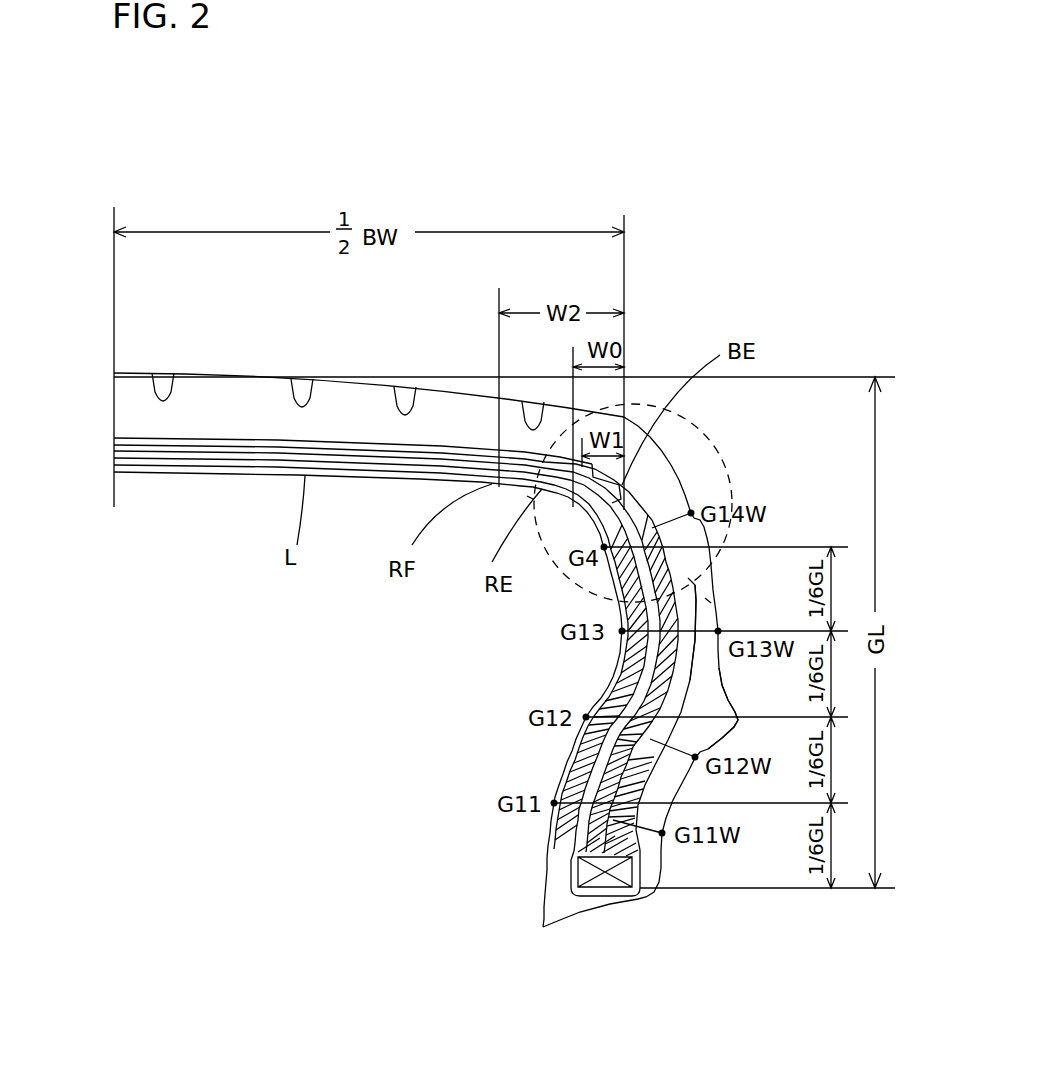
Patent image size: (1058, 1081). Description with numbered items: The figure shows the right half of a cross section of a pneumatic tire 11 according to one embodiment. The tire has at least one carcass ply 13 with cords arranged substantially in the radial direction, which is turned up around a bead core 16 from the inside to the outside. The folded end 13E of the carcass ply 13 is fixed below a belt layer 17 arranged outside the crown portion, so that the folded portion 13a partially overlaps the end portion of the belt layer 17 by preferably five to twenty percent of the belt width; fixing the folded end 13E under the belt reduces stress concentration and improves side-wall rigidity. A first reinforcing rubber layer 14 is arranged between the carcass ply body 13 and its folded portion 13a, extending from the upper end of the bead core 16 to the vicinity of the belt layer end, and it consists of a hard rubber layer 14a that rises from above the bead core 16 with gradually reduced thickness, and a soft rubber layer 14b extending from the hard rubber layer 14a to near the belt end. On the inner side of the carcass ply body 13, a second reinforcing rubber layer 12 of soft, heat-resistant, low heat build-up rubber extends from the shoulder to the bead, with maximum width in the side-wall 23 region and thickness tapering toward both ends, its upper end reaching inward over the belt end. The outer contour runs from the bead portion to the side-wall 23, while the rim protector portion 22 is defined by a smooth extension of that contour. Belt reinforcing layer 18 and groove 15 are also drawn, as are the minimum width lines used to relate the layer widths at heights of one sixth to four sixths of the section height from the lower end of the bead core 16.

The pneumatic tire 11 is at (162, 350).
The second reinforcing rubber layer 12 is at (628, 652).
The carcass ply 13 is at (613, 747).
The folded end 13E is at (530, 497).
The folded portion 13a is at (708, 600).
The first reinforcing rubber layer 14 is at (658, 682).
The hard rubber layer 14a is at (596, 835).
The soft rubber layer 14b is at (700, 596).
The groove 15 is at (234, 393).
The bead core 16 is at (606, 882).
The belt layer 17 is at (112, 453).
The belt reinforcing layer 18 is at (138, 438).
The rim protector portion 22 is at (721, 703).
The side-wall 23 is at (714, 621).